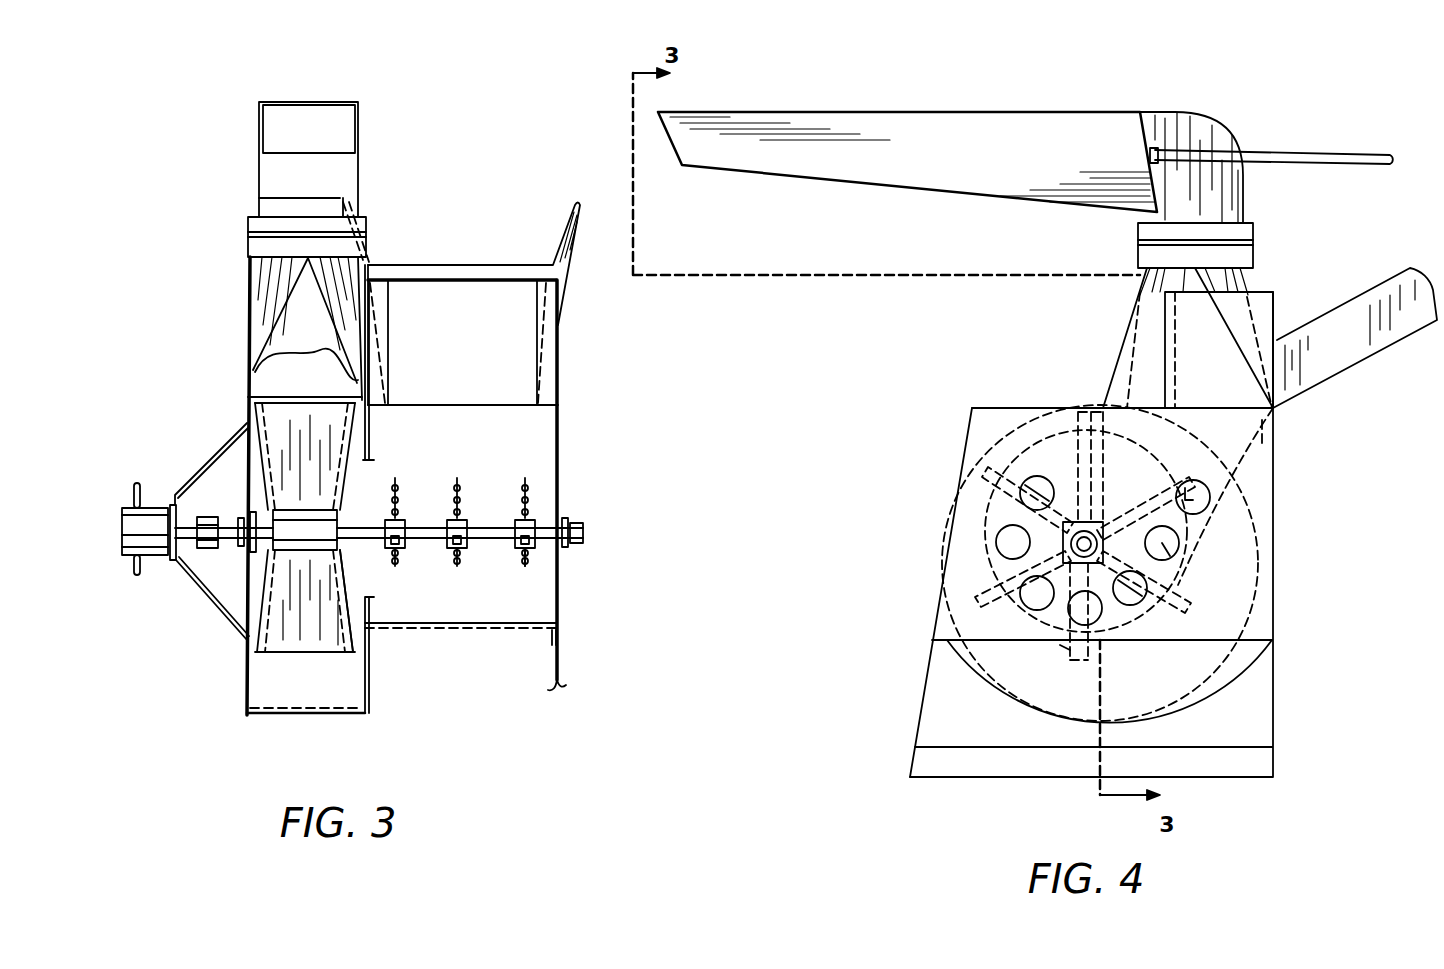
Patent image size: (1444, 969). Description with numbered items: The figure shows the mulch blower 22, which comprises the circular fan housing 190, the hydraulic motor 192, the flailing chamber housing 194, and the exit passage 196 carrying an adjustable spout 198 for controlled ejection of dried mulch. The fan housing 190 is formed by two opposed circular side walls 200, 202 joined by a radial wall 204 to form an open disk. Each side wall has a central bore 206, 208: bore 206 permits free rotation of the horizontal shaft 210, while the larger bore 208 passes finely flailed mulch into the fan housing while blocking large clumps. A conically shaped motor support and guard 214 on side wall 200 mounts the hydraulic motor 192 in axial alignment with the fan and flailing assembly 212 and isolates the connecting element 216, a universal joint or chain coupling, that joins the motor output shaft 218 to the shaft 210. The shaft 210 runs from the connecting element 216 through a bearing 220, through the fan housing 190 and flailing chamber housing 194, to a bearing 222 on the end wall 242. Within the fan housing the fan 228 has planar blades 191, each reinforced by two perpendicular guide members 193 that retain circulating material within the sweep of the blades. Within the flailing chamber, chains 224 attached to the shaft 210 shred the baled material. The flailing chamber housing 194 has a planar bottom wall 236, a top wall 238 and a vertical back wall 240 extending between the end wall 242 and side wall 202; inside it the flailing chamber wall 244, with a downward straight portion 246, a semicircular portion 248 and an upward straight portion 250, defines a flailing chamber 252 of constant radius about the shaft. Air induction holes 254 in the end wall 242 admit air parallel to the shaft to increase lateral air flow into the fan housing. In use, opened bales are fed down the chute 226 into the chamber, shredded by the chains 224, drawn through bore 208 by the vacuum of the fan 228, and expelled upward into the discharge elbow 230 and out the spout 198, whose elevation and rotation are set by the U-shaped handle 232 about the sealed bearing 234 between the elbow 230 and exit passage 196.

In FIG. 3, the mulch blower 22 is at (452, 180).
In FIG. 4, the mulch blower 22 is at (1315, 572).
In FIG. 3, the circular fan housing 190 is at (243, 703).
In FIG. 3, the planar paddles or blades 191 is at (303, 635).
In FIG. 3, the hydraulic motor 192 is at (122, 540).
In FIG. 3, the guide members 193 is at (290, 643).
In FIG. 4, the guide members 193 is at (1067, 648).
In FIG. 3, the flailing chamber housing 194 is at (565, 595).
In FIG. 4, the flailing chamber housing 194 is at (948, 720).
In FIG. 3, the exit passage 196 is at (278, 310).
In FIG. 4, the exit passage 196 is at (1248, 282).
In FIG. 3, the adjustable spout 198 is at (283, 178).
In FIG. 4, the adjustable spout 198 is at (938, 137).
In FIG. 3, the side wall 200 is at (247, 420).
In FIG. 3, the side wall 202 is at (370, 447).
In FIG. 3, the radial wall 204 is at (313, 720).
In FIG. 4, the radial wall 204 is at (1218, 690).
In FIG. 3, the bore 206 is at (250, 522).
In FIG. 3, the bore 208 is at (352, 562).
In FIG. 3, the horizontal shaft 210 is at (245, 585).
In FIG. 3, the fan and flailing assembly 212 is at (487, 517).
In FIG. 3, the conically shaped motor support and guard 214 is at (193, 475).
In FIG. 3, the connecting element 216 is at (207, 550).
In FIG. 3, the output shaft 218 is at (172, 562).
In FIG. 3, the bearing 220 is at (200, 590).
In FIG. 3, the bearing 222 is at (575, 513).
In FIG. 3, the chains 224 is at (538, 568).
In FIG. 3, the chute 226 is at (455, 265).
In FIG. 4, the chute 226 is at (1408, 330).
In FIG. 3, the fan 228 is at (340, 655).
In FIG. 4, the discharge elbow 230 is at (1207, 143).
In FIG. 4, the U-shaped handle 232 is at (1307, 157).
In FIG. 3, the sealed bearing 234 is at (352, 228).
In FIG. 4, the sealed bearing 234 is at (1243, 253).
In FIG. 4, the bottom wall 236 is at (945, 646).
In FIG. 4, the top wall 238 is at (990, 403).
In FIG. 4, the back wall 240 is at (958, 478).
In FIG. 3, the end wall 242 is at (565, 435).
In FIG. 4, the flailing chamber wall 244 is at (1262, 443).
In FIG. 4, the downwardly extending straight portion 246 is at (1245, 450).
In FIG. 4, the semicircular portion 248 is at (1120, 630).
In FIG. 4, the upwardly extending straight portion 250 is at (1043, 455).
In FIG. 3, the flailing chamber 252 is at (478, 625).
In FIG. 4, the air induction holes 254 is at (1172, 548).